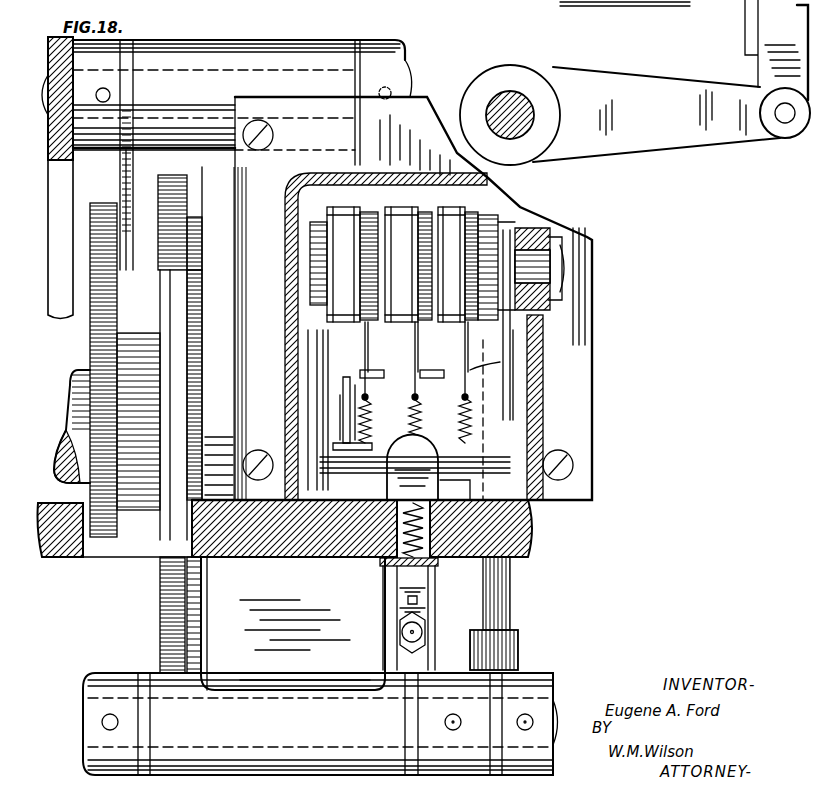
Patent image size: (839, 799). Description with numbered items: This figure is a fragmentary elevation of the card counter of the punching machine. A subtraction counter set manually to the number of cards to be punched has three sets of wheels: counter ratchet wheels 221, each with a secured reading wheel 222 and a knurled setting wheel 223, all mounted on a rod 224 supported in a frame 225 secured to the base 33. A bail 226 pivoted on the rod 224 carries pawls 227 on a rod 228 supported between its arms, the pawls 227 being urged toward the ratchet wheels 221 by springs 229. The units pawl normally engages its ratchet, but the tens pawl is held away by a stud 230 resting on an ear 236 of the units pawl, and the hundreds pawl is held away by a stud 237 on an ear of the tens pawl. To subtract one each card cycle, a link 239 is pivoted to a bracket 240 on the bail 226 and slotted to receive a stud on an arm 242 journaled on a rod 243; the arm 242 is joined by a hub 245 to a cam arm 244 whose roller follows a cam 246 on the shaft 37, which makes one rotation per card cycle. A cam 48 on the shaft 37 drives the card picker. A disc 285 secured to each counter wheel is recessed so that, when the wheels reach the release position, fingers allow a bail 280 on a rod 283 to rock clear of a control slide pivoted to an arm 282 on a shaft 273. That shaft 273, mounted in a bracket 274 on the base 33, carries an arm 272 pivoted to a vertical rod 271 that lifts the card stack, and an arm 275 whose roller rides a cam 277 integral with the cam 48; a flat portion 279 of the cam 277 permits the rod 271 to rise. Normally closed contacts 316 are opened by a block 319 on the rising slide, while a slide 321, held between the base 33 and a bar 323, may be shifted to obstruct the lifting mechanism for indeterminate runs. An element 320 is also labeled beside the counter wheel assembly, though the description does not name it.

The base 33 is at (535, 535).
The shaft 37 is at (72, 380).
The cam 48 is at (215, 460).
The counter ratchet wheels 221 is at (365, 208).
The reading wheel 222 is at (337, 225).
The knurled setting wheel 223 is at (416, 361).
The rod 224 is at (283, 250).
The frame 225 is at (285, 345).
The bail 226 is at (355, 457).
The pawls 227 is at (470, 372).
The rod 228 is at (337, 353).
The springs 229 is at (462, 435).
The stud 230 is at (436, 417).
The ear 236 is at (414, 390).
The stud 237 is at (380, 421).
The link 239 is at (350, 388).
The bracket 240 is at (343, 417).
The arm 242 is at (395, 62).
The rod 243 is at (410, 95).
The cam arm 244 is at (120, 190).
The hub 245 is at (235, 50).
The cam 246 is at (100, 335).
The vertical rod 271 is at (500, 582).
The arm 272 is at (493, 690).
The shaft 273 is at (505, 110).
The bracket 274 is at (293, 623).
The arm 275 is at (145, 680).
The cam 277 is at (172, 590).
The flat portion 279 is at (173, 360).
The bail 280 is at (513, 393).
The arm 282 is at (710, 128).
The rod 283 is at (465, 467).
The discs 285 is at (430, 205).
The contacts 316 is at (695, 0).
The block 319 is at (745, 15).
The collar 320 is at (482, 305).
The slide 321 is at (412, 467).
The bar 323 is at (400, 533).